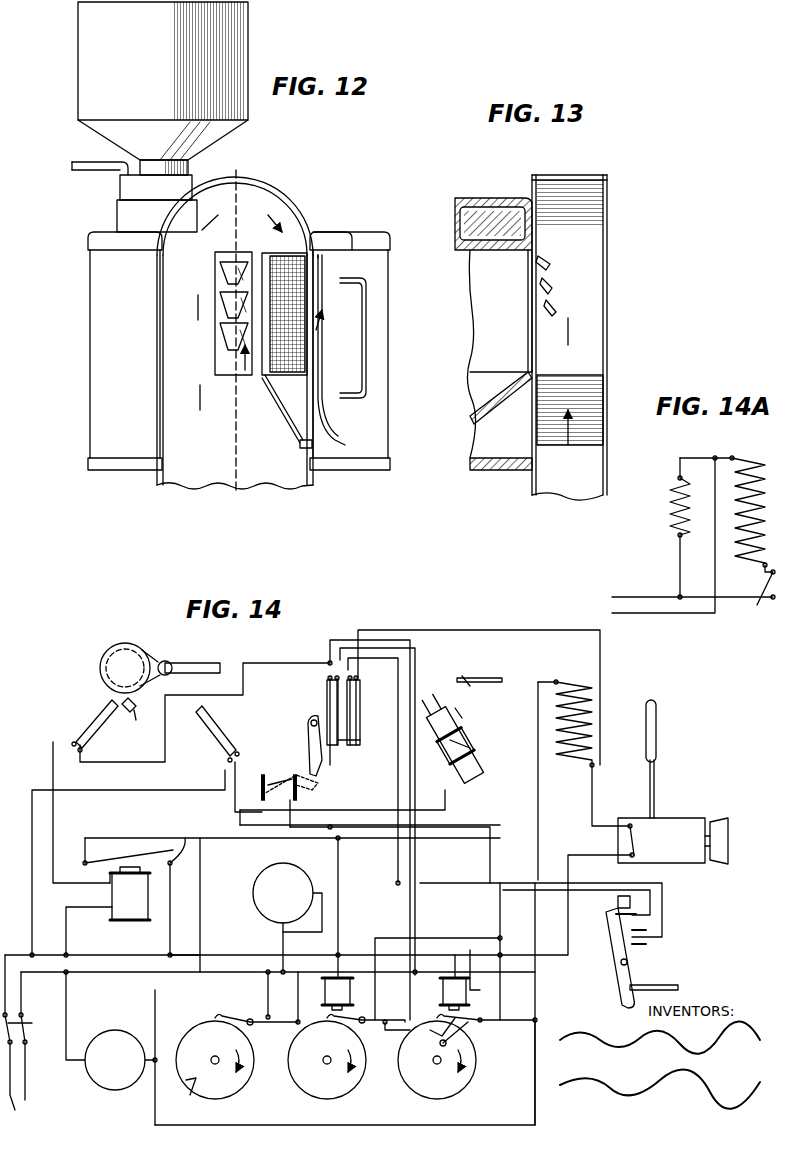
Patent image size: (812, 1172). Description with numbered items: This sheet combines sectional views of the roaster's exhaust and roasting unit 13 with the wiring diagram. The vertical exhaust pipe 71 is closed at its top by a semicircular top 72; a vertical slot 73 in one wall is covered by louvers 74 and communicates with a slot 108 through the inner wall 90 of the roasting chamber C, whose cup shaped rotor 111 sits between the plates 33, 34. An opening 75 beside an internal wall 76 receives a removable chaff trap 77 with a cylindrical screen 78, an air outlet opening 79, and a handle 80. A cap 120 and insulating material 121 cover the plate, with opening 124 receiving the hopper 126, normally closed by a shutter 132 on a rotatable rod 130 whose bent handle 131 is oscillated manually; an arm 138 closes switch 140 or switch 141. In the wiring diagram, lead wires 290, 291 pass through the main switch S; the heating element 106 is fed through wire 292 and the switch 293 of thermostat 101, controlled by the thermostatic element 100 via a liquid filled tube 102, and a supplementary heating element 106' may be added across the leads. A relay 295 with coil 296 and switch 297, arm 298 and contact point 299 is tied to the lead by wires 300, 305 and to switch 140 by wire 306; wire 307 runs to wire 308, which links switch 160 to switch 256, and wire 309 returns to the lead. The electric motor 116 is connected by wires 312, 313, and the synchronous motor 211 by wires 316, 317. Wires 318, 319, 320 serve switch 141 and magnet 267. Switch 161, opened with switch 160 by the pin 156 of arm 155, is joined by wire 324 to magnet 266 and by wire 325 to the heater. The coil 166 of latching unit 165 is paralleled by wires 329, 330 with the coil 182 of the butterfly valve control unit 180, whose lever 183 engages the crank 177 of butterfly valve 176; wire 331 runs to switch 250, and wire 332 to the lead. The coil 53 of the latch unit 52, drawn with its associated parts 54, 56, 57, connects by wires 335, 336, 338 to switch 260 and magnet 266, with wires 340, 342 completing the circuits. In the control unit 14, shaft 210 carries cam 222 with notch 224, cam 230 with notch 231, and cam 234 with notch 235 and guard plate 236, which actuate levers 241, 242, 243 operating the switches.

In FIG. 12, the hopper 126 is at (88, 68).
In FIG. 12, the handle 131 is at (88, 168).
In FIG. 14, the handle 131 is at (208, 664).
In FIG. 12, the plate 34 is at (90, 244).
In FIG. 12, the roasting unit 13 is at (90, 340).
In FIG. 13, the roasting unit 13 is at (470, 444).
In FIG. 12, the plate 33 is at (90, 464).
In FIG. 12, the semicircular top 72 is at (268, 198).
In FIG. 13, the semicircular top 72 is at (578, 176).
In FIG. 12, the vertical exhaust pipe 71 is at (158, 398).
In FIG. 13, the vertical exhaust pipe 71 is at (608, 270).
In FIG. 12, the cap 120 is at (340, 210).
In FIG. 13, the cap 120 is at (472, 198).
In FIG. 13, the heat insulating material 121 is at (460, 216).
In FIG. 12, the air outlet opening 79 is at (332, 250).
In FIG. 12, the louvers 74 is at (228, 336).
In FIG. 13, the louvers 74 is at (552, 322).
In FIG. 12, the cylindrical screen 78 is at (300, 348).
In FIG. 12, the wall 76 is at (276, 415).
In FIG. 13, the wall 76 is at (596, 364).
In FIG. 12, the opening 75 is at (302, 446).
In FIG. 12, the chaff trap 77 is at (342, 290).
In FIG. 12, the handle 80 is at (366, 330).
In FIG. 13, the roasting chamber C is at (470, 278).
In FIG. 13, the slot 108 is at (528, 338).
In FIG. 13, the vertical slot 73 is at (550, 296).
In FIG. 13, the cup shaped rotor 111 is at (488, 400).
In FIG. 13, the inner wall 90 is at (537, 428).
In FIG. 14A, the electric heating element 106 is at (723, 498).
In FIG. 14, the electric heating element 106 is at (566, 709).
In FIG. 14A, the supplementary heating element 106' is at (657, 527).
In FIG. 14A, the lead wire 290 is at (640, 597).
In FIG. 14, the lead wire 290 is at (582, 852).
In FIG. 14A, the lead wire 291 is at (662, 616).
In FIG. 14, the lead wire 291 is at (538, 824).
In FIG. 14A, the switch 293 is at (760, 604).
In FIG. 14, the switch 293 is at (638, 842).
In FIG. 14, the shutter 132 is at (126, 650).
In FIG. 14, the opening 124 is at (108, 676).
In FIG. 14, the rotatable rod 130 is at (168, 662).
In FIG. 14, the arm 138 is at (137, 718).
In FIG. 14, the switch 140 is at (92, 712).
In FIG. 14, the switch 141 is at (218, 730).
In FIG. 14, the wire 307 is at (120, 756).
In FIG. 14, the wire 306 is at (53, 780).
In FIG. 14, the wire 318 is at (162, 786).
In FIG. 14, the wire 319 is at (235, 800).
In FIG. 14, the magnetic latching unit 165 is at (264, 765).
In FIG. 14, the coil 166 is at (286, 775).
In FIG. 14, the wire 308 is at (345, 640).
In FIG. 14, the wire 309 is at (378, 648).
In FIG. 14, the wire 324 is at (398, 668).
In FIG. 14, the wire 325 is at (472, 630).
In FIG. 14, the switch 160 is at (326, 692).
In FIG. 14, the switch 161 is at (360, 694).
In FIG. 14, the arm 155 is at (308, 732).
In FIG. 14, the pin 156 is at (345, 759).
In FIG. 14, the wire 329 is at (356, 815).
In FIG. 14, the butterfly valve control unit 180 is at (452, 720).
In FIG. 14, the butterfly valve 176 is at (486, 678).
In FIG. 14, the crank 177 is at (466, 676).
In FIG. 14, the lever 183 is at (470, 708).
In FIG. 14, the coil 182 is at (480, 742).
In FIG. 14, the wire 292 is at (600, 810).
In FIG. 14, the thermostatic switch element 101 is at (690, 820).
In FIG. 14, the liquid filled tube 102 is at (660, 770).
In FIG. 14, the thermostatic element 100 is at (660, 718).
In FIG. 14, the main switch S is at (25, 1032).
In FIG. 14, the wire 316 is at (66, 1014).
In FIG. 14, the synchronous electric motor 211 is at (112, 1085).
In FIG. 14, the wire 317 is at (155, 996).
In FIG. 14, the arm 298 is at (98, 850).
In FIG. 14, the switch 297 is at (136, 845).
In FIG. 14, the contact point 299 is at (142, 894).
In FIG. 14, the wire 313 is at (242, 840).
In FIG. 14, the coil 296 is at (112, 893).
In FIG. 14, the wire 305 is at (66, 932).
In FIG. 14, the relay 295 is at (130, 905).
In FIG. 14, the wire 300 is at (180, 896).
In FIG. 14, the electric motor 116 is at (262, 912).
In FIG. 14, the wire 312 is at (268, 934).
In FIG. 14, the wire 331 is at (330, 850).
In FIG. 14, the wire 330 is at (370, 838).
In FIG. 14, the wire 332 is at (340, 898).
In FIG. 14, the wire 338 is at (380, 940).
In FIG. 14, the magnet 266 is at (336, 978).
In FIG. 14, the magnet 267 is at (452, 978).
In FIG. 14, the wire 320 is at (472, 950).
In FIG. 14, the wire 336 is at (662, 886).
In FIG. 14, the wire 335 is at (652, 908).
In FIG. 14, the coil 53 is at (660, 932).
In FIG. 14, the contact 54 is at (616, 902).
In FIG. 14, the magnetic latching unit 52 is at (604, 952).
In FIG. 14, the lever end 56 is at (622, 982).
In FIG. 14, the bar 57 is at (654, 984).
In FIG. 14, the switch 260 is at (530, 1018).
In FIG. 14, the wire 342 is at (416, 1120).
In FIG. 14, the wire 340 is at (268, 1002).
In FIG. 14, the lever 241 is at (218, 1018).
In FIG. 14, the switch 250 is at (290, 1026).
In FIG. 14, the cam 222 is at (200, 1034).
In FIG. 14, the notch 224 is at (190, 1090).
In FIG. 14, the shaft 210 is at (218, 1056).
In FIG. 14, the cam 230 is at (302, 1078).
In FIG. 14, the notch 231 is at (328, 1026).
In FIG. 14, the lever 242 is at (352, 1016).
In FIG. 14, the switch 256 is at (393, 1015).
In FIG. 14, the cam 234 is at (412, 1080).
In FIG. 14, the guard plate 236 is at (434, 1033).
In FIG. 14, the lever 243 is at (475, 1024).
In FIG. 14, the notch 235 is at (470, 1036).
In FIG. 14, the control unit 14 is at (240, 1102).